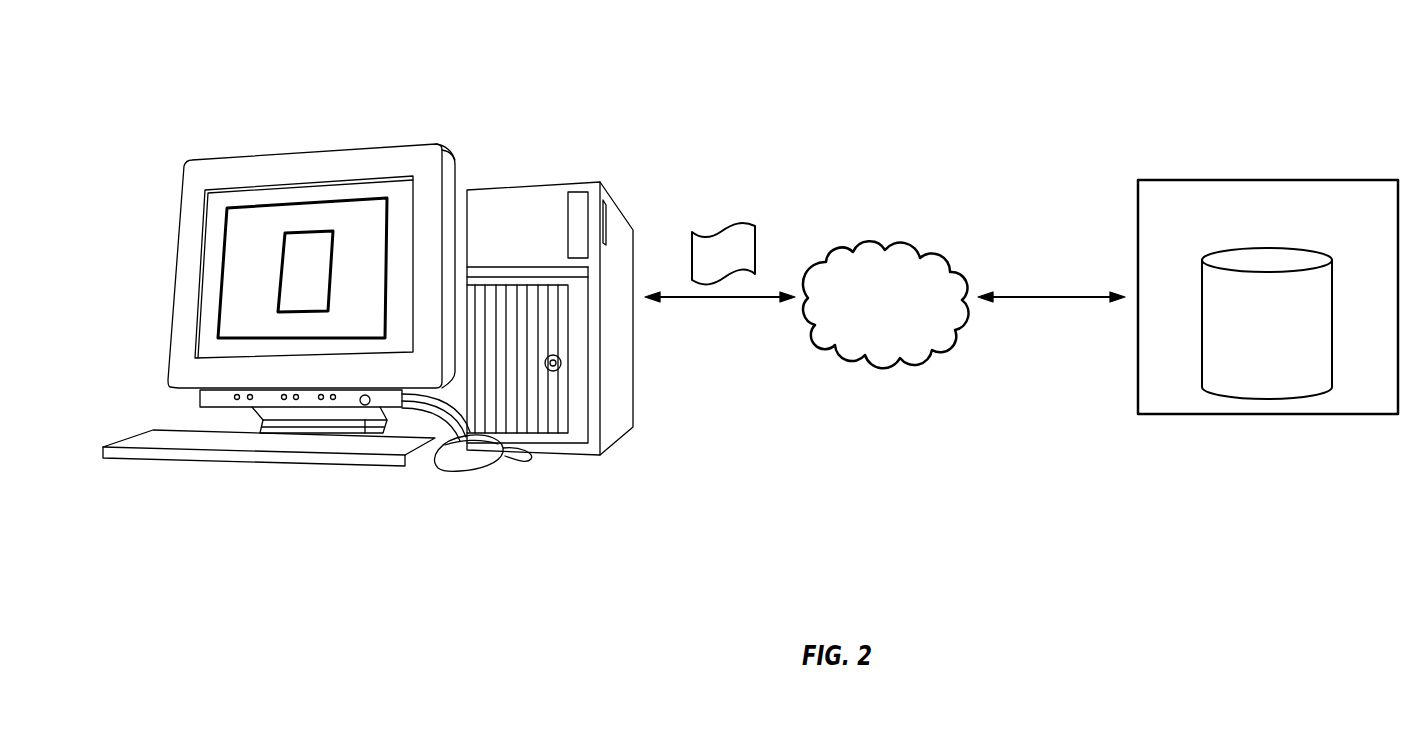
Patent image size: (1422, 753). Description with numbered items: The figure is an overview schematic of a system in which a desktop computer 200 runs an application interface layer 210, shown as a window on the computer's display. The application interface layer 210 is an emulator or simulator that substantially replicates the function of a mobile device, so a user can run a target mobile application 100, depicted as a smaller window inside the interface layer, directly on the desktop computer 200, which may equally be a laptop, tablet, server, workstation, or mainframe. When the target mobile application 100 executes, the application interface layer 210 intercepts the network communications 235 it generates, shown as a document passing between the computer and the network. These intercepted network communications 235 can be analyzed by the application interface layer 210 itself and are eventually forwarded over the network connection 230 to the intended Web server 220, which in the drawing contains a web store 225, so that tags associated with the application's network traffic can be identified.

The target mobile application 100 is at (308, 260).
The desktop computer 200 is at (265, 130).
The application interface layer 210 is at (355, 220).
The Web server 220 is at (1363, 229).
The web store 225 is at (1286, 384).
The network connection 230 is at (904, 333).
The network communications 235 is at (741, 265).